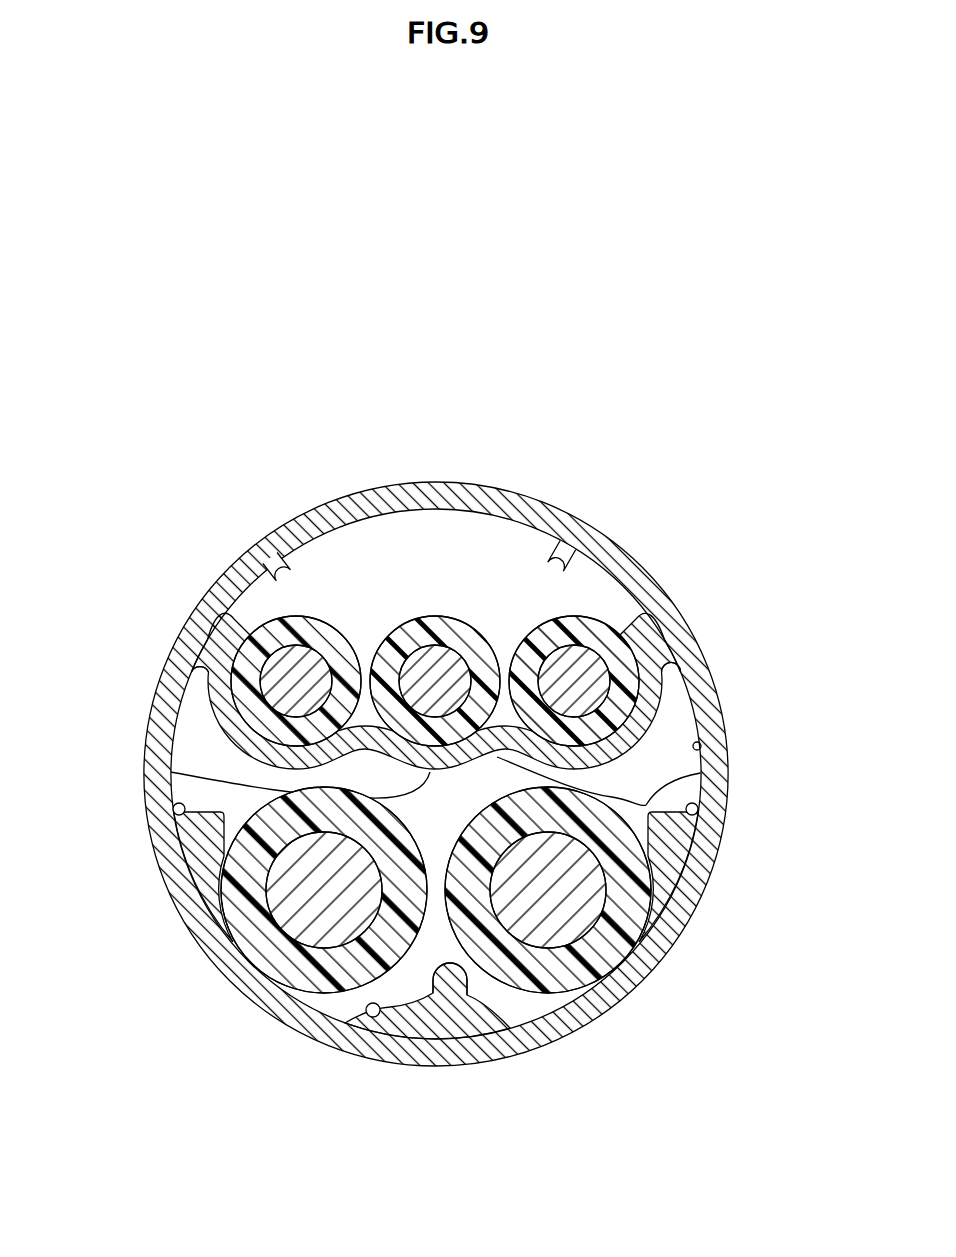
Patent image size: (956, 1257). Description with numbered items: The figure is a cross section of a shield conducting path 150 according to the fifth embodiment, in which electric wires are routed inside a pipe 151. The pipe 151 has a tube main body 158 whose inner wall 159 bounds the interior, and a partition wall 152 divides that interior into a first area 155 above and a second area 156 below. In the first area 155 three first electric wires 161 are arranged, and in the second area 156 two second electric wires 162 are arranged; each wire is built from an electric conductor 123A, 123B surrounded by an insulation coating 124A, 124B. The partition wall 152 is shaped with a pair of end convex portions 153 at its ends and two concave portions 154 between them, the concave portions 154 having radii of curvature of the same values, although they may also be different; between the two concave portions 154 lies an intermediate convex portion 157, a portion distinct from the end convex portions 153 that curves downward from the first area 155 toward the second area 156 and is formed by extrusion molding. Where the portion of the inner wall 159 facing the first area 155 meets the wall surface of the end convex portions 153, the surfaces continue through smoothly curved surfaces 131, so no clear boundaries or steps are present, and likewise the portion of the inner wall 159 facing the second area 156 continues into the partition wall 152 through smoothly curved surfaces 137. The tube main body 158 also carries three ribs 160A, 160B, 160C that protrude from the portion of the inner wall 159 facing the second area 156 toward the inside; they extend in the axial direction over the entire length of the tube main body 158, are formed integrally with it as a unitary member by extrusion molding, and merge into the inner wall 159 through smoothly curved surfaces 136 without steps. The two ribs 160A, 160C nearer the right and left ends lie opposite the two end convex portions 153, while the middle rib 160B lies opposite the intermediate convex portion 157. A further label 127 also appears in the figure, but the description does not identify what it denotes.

The electric conductor 123A is at (209, 623).
The electric conductor 123B is at (318, 906).
The insulation coating 124A is at (224, 609).
The insulation coating 124B is at (302, 972).
The space in accommodating portion 127 is at (404, 547).
The smoothly curved surface 131 is at (414, 609).
The smoothly curved surface 136 is at (212, 815).
The smoothly curved surface 137 is at (196, 670).
The shield conducting path 150 is at (554, 498).
The pipe 151 is at (435, 497).
The partition wall 152 is at (213, 722).
The end convex portion 153 is at (272, 765).
The concave portion 154 is at (372, 724).
The first area 155 is at (264, 556).
The second area 156 is at (701, 746).
The intermediate convex portion 157 is at (171, 772).
The tube main body 158 is at (404, 510).
The inner wall 159 is at (570, 538).
The rib 160A is at (174, 808).
The rib 160B is at (461, 985).
The rib 160C is at (698, 778).
The first electric wire 161 is at (322, 607).
The second electric wire 162 is at (335, 1002).